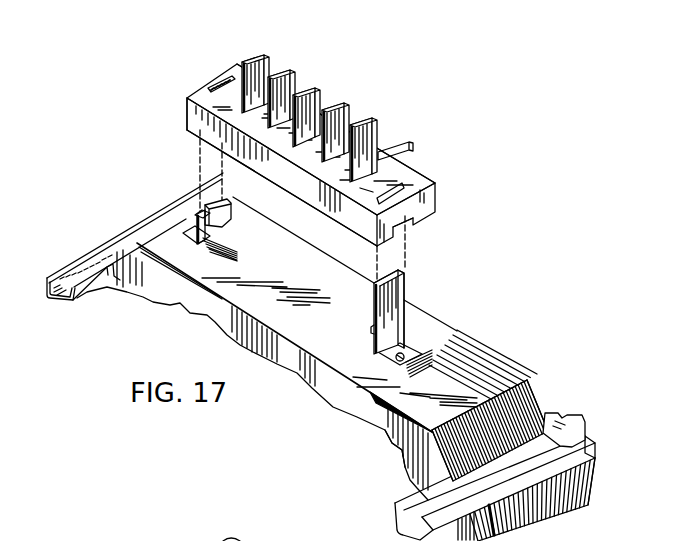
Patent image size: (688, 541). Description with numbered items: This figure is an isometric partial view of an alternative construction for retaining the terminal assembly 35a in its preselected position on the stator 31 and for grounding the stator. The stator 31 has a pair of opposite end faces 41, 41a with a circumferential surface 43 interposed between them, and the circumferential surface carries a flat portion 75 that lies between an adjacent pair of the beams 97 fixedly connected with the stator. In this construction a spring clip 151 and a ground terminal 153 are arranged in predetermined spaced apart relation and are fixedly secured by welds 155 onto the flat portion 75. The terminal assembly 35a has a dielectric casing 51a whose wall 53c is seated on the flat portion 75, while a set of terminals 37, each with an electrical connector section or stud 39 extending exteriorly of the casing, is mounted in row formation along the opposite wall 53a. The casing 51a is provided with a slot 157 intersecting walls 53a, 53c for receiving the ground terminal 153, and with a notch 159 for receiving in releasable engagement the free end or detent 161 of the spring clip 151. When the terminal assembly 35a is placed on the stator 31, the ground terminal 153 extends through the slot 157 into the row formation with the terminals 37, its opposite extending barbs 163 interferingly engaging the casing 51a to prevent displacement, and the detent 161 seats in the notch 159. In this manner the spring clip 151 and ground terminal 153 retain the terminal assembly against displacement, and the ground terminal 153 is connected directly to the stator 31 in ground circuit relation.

The stator 31 is at (560, 384).
The terminal assembly 35a is at (205, 66).
The terminals 37 is at (346, 103).
The electrical connector section 39 is at (402, 146).
The end face 41 is at (526, 384).
The end face 41a is at (392, 431).
The circumferential surface 43 is at (559, 513).
The casing 51a is at (187, 108).
The wall 53a is at (200, 95).
The wall 53c is at (188, 131).
The flat portion 75 is at (480, 357).
The beams 97 is at (83, 260).
The spring clip 151 is at (186, 236).
The ground terminal 153 is at (405, 325).
The welds 155 is at (193, 232).
The slot 157 is at (405, 188).
The notch 159 is at (226, 76).
The detent 161 is at (230, 228).
The barbs 163 is at (405, 310).